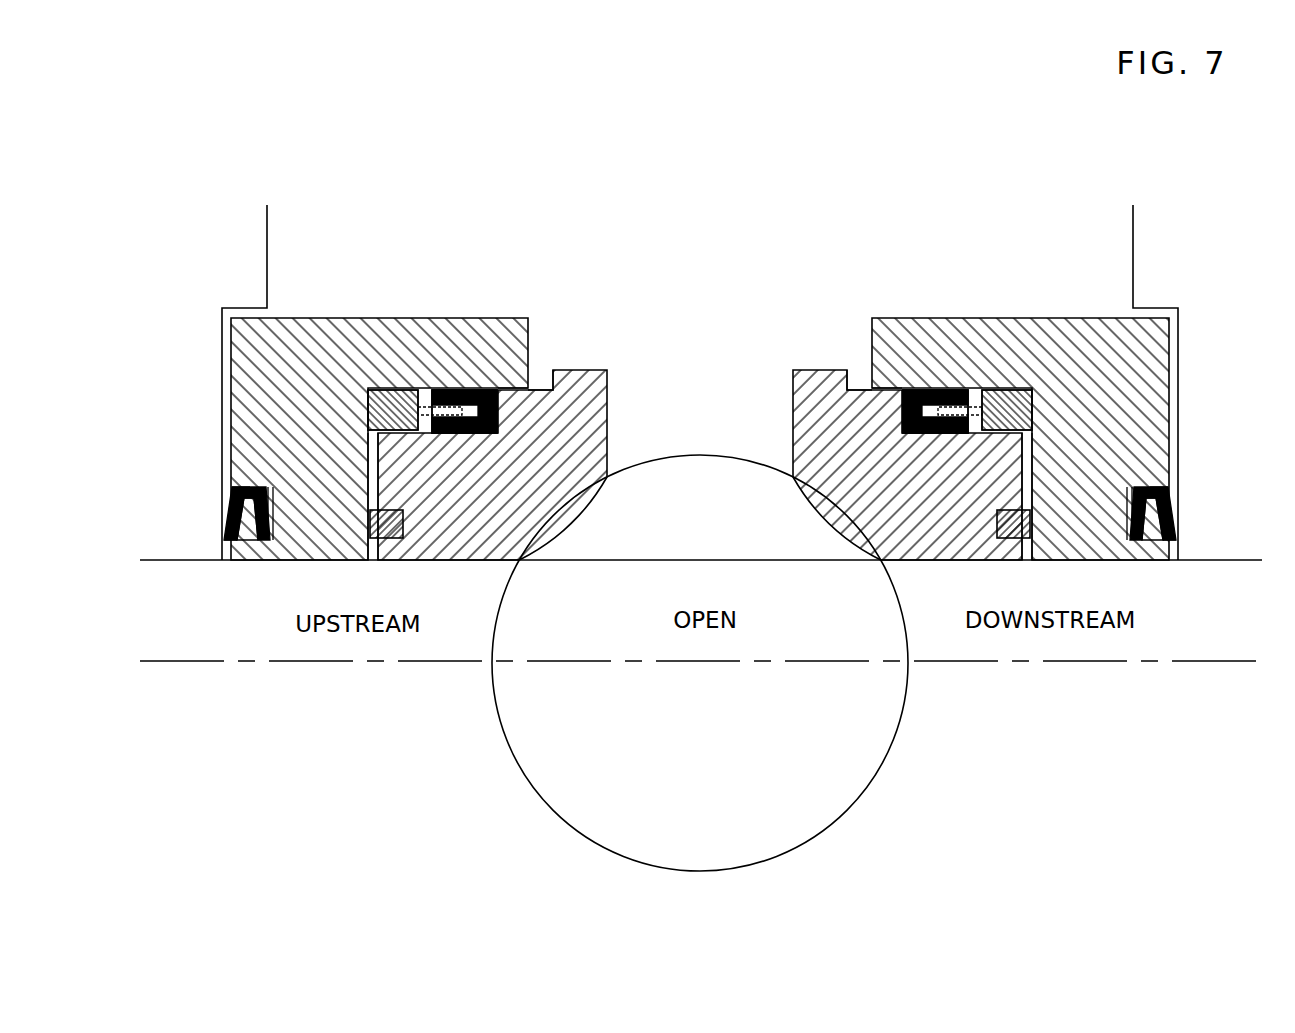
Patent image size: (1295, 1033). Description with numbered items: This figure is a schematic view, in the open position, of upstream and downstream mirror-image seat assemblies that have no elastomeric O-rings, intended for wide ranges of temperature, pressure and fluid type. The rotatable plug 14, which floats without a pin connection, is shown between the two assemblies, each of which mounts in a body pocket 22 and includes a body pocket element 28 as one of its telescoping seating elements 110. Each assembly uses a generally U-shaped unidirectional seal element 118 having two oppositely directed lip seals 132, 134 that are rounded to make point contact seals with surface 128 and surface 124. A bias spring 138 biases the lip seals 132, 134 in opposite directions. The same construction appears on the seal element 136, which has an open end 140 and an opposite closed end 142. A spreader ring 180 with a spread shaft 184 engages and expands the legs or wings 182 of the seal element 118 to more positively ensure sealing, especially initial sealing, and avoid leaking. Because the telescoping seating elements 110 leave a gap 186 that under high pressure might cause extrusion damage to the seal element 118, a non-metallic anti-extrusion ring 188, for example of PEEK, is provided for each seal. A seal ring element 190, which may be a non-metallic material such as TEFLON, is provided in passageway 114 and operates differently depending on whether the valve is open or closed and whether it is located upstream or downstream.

The plug 14 is at (825, 829).
The body pocket 22 is at (699, 382).
The body pocket element 28 is at (699, 439).
The seating elements 110 is at (442, 187).
The passageway 114 is at (700, 517).
The unidirectional seal element 118 is at (702, 335).
The surface 124 is at (700, 506).
The surface 128 is at (703, 316).
The lip seal 132 is at (699, 513).
The lip seal 134 is at (706, 546).
The seal element 136 is at (699, 504).
The bias spring 138 is at (667, 570).
The open end 140 is at (700, 573).
The closed end 142 is at (699, 457).
The spreader ring 180 is at (699, 314).
The wings 182 is at (700, 343).
The spread shaft 184 is at (702, 351).
The gap 186 is at (700, 312).
The anti-extrusion ring 188 is at (700, 332).
The seal ring element 190 is at (700, 555).